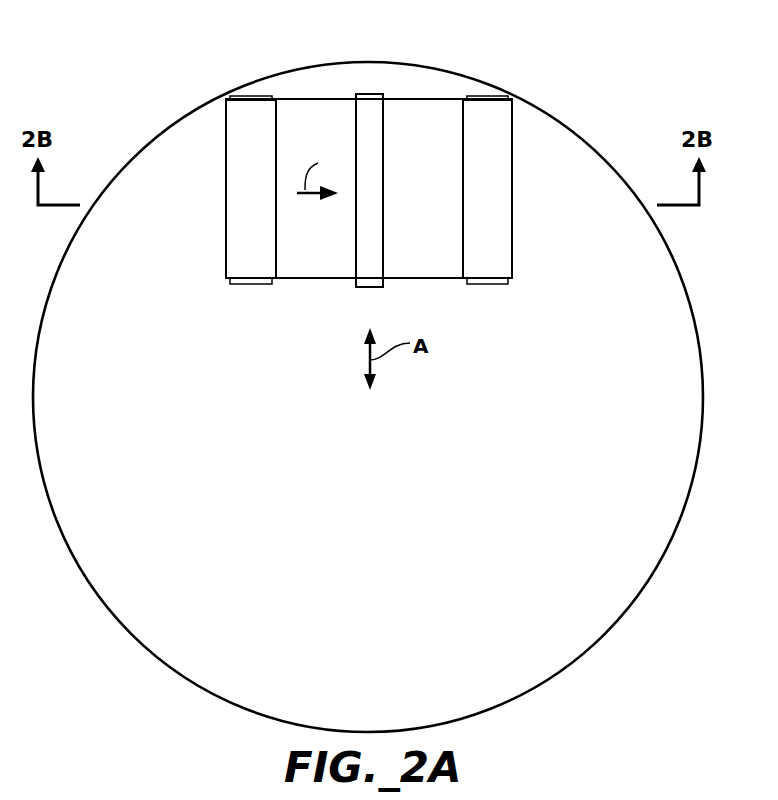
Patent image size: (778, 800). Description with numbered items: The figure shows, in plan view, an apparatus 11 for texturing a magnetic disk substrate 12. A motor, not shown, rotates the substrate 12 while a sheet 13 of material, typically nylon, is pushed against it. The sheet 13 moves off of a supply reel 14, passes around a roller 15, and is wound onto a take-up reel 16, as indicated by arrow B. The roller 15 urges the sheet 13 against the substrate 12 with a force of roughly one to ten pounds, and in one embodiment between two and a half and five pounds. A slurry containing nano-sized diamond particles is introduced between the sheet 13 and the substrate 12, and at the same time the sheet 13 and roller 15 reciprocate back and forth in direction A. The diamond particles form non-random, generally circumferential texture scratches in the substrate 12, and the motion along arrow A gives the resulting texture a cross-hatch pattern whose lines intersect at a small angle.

The apparatus 11 is at (487, 58).
The substrate 12 is at (573, 663).
The sheet 13 is at (420, 280).
The supply reel 14 is at (226, 200).
The roller 15 is at (373, 93).
The take-up reel 16 is at (512, 233).